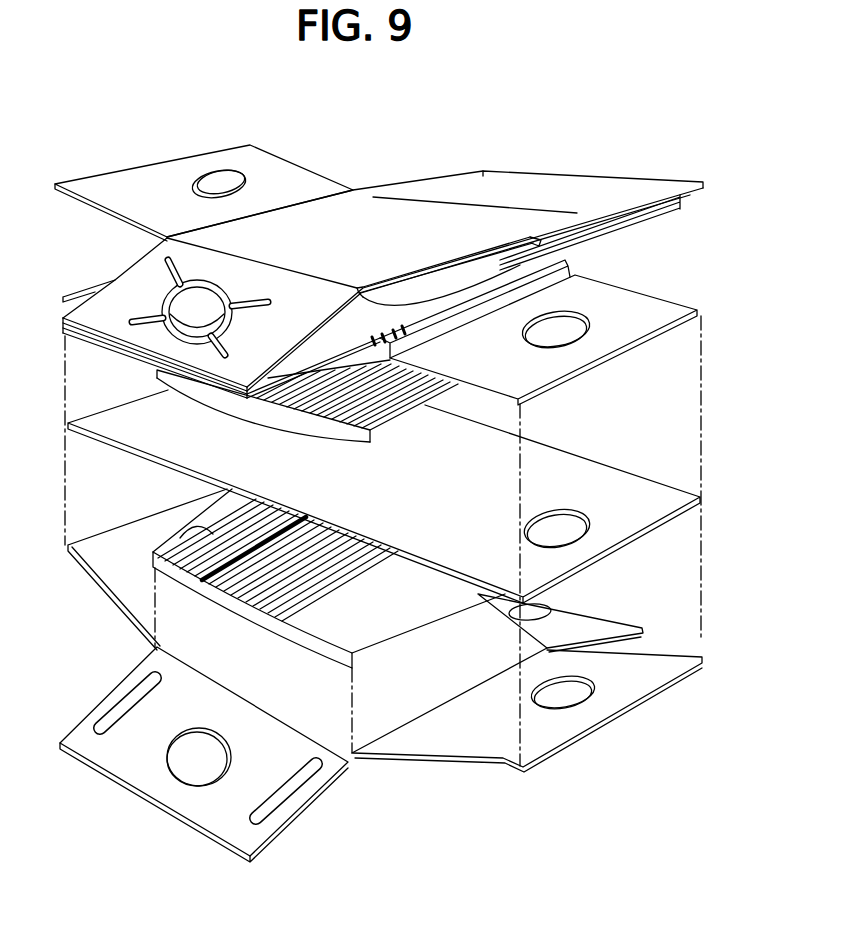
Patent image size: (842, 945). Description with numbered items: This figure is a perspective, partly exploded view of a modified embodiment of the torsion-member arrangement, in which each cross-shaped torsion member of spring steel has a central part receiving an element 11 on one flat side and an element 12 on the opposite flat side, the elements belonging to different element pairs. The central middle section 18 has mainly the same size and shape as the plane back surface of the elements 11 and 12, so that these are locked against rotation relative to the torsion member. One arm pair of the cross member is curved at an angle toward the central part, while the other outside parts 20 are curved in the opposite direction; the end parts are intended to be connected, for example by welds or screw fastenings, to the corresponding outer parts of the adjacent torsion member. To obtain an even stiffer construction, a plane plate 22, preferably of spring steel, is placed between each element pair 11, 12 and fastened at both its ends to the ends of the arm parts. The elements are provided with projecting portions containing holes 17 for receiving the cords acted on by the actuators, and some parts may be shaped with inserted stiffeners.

The element 11 is at (447, 280).
The element 12 is at (483, 313).
The hole 17 is at (183, 777).
The central middle section 18 is at (373, 197).
The outside part 20 is at (133, 188).
The plane plate 22 is at (603, 228).